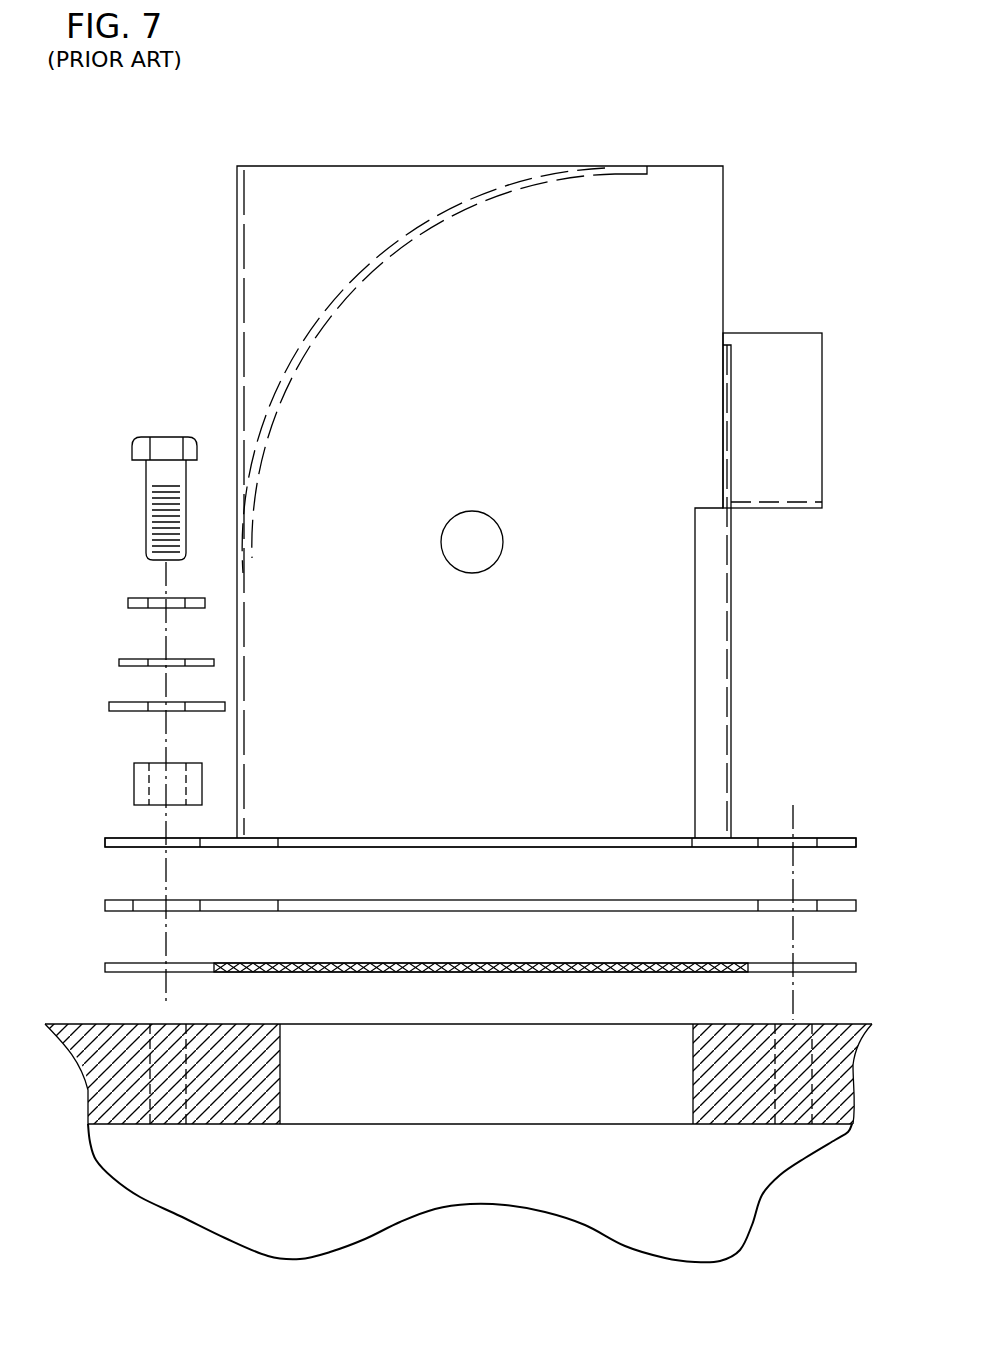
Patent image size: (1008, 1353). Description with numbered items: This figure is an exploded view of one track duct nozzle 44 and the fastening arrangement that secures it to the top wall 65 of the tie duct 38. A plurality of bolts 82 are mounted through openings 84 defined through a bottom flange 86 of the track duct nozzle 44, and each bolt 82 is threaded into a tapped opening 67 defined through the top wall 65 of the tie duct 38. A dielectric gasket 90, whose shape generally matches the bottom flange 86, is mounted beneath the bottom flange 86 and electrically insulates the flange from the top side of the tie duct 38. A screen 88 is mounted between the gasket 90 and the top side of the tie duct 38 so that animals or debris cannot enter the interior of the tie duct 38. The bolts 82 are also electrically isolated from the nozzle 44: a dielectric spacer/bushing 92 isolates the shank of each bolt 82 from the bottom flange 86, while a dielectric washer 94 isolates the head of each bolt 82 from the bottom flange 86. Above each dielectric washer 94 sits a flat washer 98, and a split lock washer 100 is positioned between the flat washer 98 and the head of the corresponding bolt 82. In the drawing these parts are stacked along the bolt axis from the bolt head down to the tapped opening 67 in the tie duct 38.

The track duct nozzle 44 is at (460, 167).
The bolt 82 is at (133, 452).
The split lock washer 100 is at (128, 600).
The flat washer 98 is at (120, 660).
The dielectric washer 94 is at (110, 704).
The dielectric spacer/bushing 92 is at (135, 785).
The opening 84 is at (133, 843).
The bottom flange 86 is at (830, 838).
The dielectric gasket 90 is at (830, 901).
The screen 88 is at (830, 963).
The top wall 65 is at (828, 1023).
The tie duct 38 is at (461, 1099).
The tapped opening 67 is at (188, 1095).